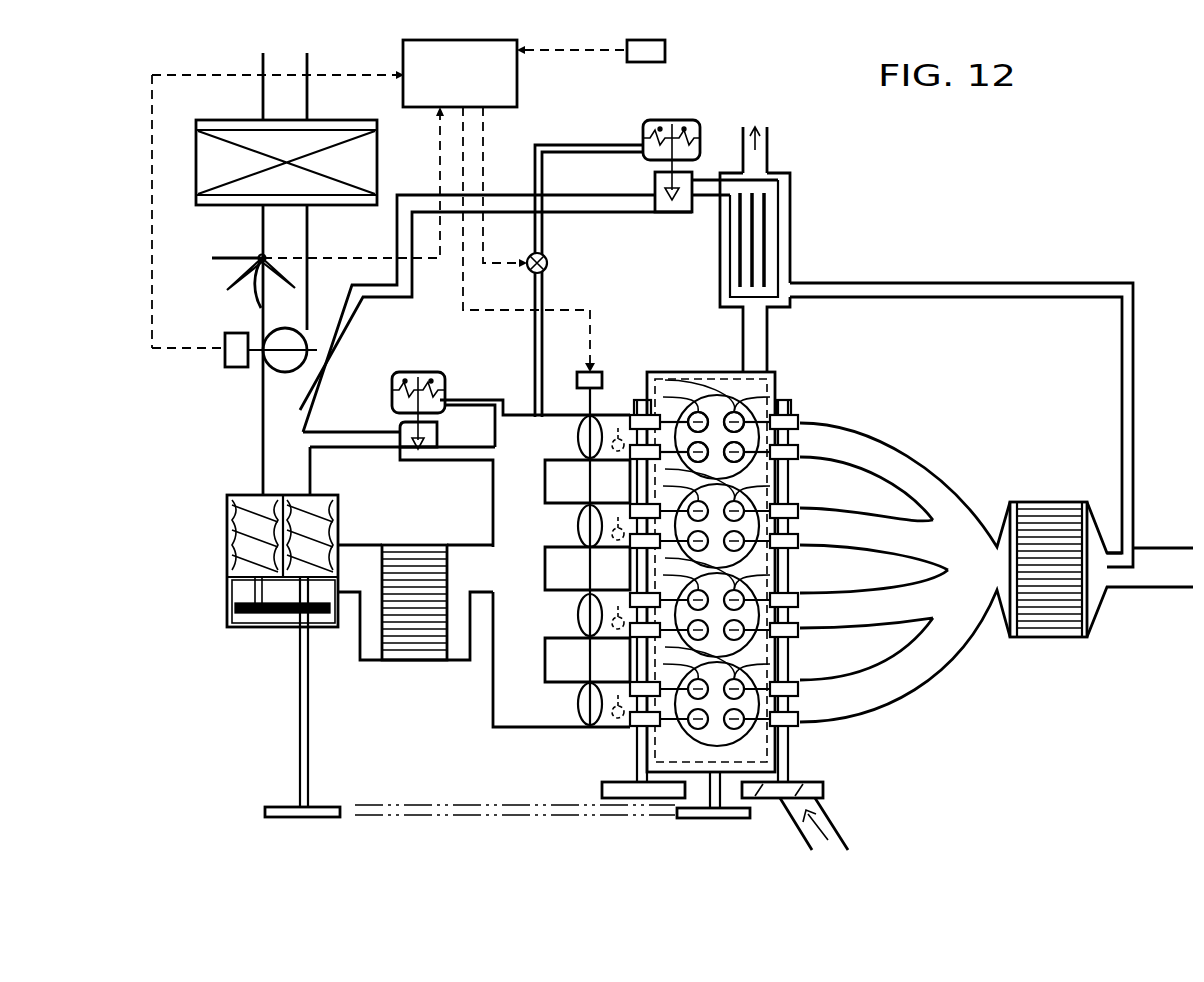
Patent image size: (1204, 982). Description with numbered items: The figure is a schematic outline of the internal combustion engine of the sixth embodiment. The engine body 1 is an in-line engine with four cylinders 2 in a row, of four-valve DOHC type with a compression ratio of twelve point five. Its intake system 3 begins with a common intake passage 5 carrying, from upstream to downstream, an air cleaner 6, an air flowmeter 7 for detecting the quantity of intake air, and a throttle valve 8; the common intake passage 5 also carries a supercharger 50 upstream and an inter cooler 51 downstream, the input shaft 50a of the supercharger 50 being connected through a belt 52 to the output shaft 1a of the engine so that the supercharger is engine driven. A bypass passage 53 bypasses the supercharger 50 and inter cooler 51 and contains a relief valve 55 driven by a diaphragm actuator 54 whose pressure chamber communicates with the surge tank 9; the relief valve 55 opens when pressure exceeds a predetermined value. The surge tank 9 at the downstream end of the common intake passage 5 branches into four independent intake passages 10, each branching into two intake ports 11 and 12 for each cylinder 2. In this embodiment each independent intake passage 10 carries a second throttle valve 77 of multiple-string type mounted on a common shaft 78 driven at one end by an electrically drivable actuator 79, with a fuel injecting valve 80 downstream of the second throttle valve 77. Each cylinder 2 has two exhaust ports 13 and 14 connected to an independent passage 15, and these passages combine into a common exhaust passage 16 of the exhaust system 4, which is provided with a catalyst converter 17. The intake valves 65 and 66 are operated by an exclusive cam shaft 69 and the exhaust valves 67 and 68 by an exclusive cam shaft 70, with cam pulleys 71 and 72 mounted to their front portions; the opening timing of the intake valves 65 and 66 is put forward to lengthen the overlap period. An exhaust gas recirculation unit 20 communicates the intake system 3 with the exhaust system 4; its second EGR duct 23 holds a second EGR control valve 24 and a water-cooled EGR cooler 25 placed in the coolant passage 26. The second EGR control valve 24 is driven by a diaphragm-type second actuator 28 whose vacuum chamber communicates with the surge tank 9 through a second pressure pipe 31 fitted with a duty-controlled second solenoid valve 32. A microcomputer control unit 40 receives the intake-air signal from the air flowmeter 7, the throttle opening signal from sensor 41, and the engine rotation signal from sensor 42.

The engine body 1 is at (650, 372).
The output shaft 1a is at (718, 812).
The cylinders 2 is at (776, 374).
The intake system 3 is at (488, 682).
The exhaust system 4 is at (924, 703).
The common intake passage 5 is at (270, 429).
The air cleaner 6 is at (196, 155).
The air flowmeter 7 is at (212, 272).
The throttle valve 8 is at (496, 313).
The surge tank 9 is at (508, 586).
The independent intake passages 10 is at (565, 718).
The intake port 11 is at (684, 422).
The intake port 12 is at (684, 452).
The exhaust port 13 is at (747, 422).
The exhaust port 14 is at (747, 452).
The independent intake passage (exhaust branch) 15 is at (891, 716).
The common exhaust passage 16 is at (1148, 581).
The catalyst converter 17 is at (1057, 638).
The exhaust gas recirculation unit 20 is at (826, 274).
The second EGR duct 23 is at (950, 283).
The second EGR control valve 24 is at (655, 190).
The EGR cooler 25 is at (790, 210).
The coolant passage 26 is at (768, 145).
The second actuator 28 is at (672, 120).
The second pressure pipe 31 is at (545, 148).
The second solenoid valve 32 is at (548, 259).
The control unit 40 is at (403, 90).
The sensor 41 is at (235, 368).
The sensor 42 is at (632, 62).
The supercharger 50 is at (226, 540).
The input shaft 50a is at (298, 712).
The inter cooler 51 is at (440, 547).
The belt 52 is at (440, 805).
The bypass passage 53 is at (375, 449).
The actuator 54 is at (418, 372).
The relief valve 55 is at (400, 432).
The intake valve 65 is at (640, 340).
The intake valve 66 is at (663, 352).
The exhaust valve 67 is at (795, 400).
The exhaust valve 68 is at (800, 424).
The cam shaft 69 is at (640, 762).
The cam shaft 70 is at (793, 735).
The cam pulley 71 is at (602, 790).
The cam pulley 72 is at (824, 790).
The second throttle valve 77 is at (580, 690).
The common shaft 78 is at (585, 730).
The actuator 79 is at (585, 372).
The fuel injecting valve 80 is at (612, 551).